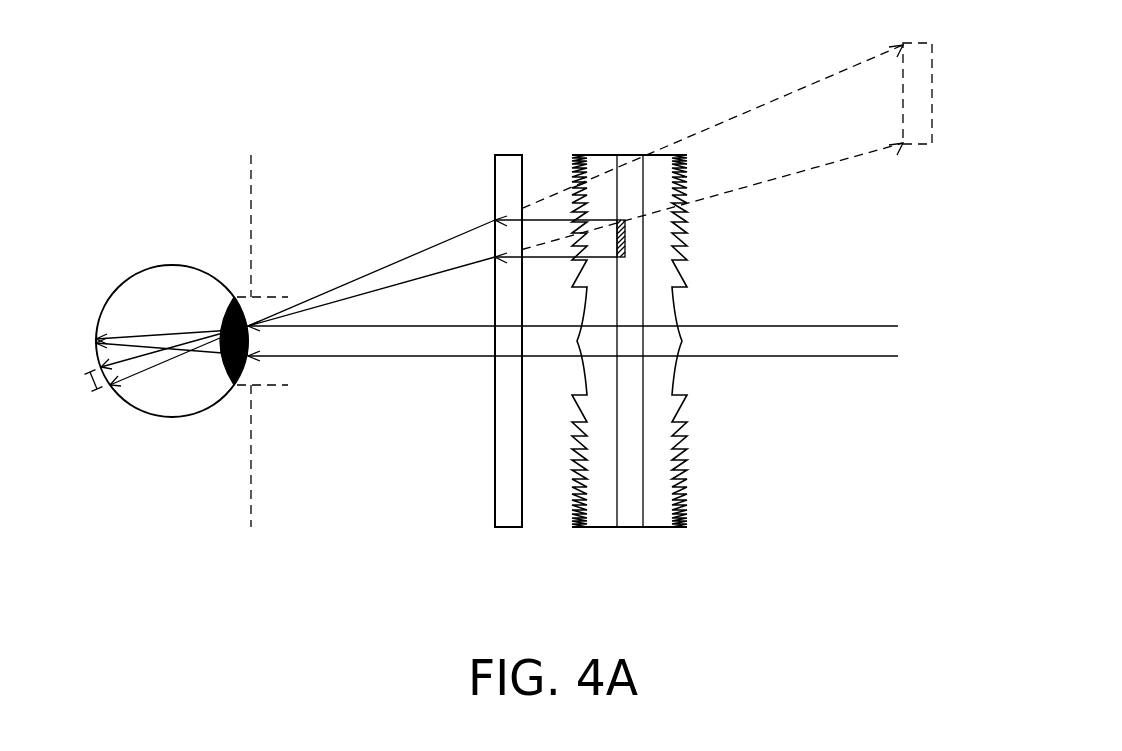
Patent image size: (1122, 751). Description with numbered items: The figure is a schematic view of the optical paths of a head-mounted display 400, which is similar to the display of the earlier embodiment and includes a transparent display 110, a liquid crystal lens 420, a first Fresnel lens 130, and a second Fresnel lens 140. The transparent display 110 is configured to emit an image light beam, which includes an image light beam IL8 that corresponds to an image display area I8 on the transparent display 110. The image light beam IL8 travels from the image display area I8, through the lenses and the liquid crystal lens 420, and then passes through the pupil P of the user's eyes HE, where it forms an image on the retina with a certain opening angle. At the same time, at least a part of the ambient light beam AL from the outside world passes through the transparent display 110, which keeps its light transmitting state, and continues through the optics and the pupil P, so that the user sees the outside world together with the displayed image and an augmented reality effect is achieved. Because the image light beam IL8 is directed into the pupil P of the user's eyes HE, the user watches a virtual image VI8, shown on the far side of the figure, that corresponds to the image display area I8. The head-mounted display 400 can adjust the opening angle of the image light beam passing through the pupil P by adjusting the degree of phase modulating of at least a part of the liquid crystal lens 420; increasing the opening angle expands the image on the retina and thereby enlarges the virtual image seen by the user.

The head-mounted display 400 is at (727, 557).
The liquid crystal lens 420 is at (502, 507).
The second Fresnel lens 140 is at (605, 505).
The first Fresnel lens 130 is at (665, 155).
The transparent display 110 is at (659, 354).
The user's eyes HE is at (172, 403).
The pupil P is at (251, 478).
The ambient light beam AL is at (862, 326).
The image light beam IL8 is at (403, 283).
The image display area I8 is at (625, 250).
The virtual image VI8 is at (932, 140).